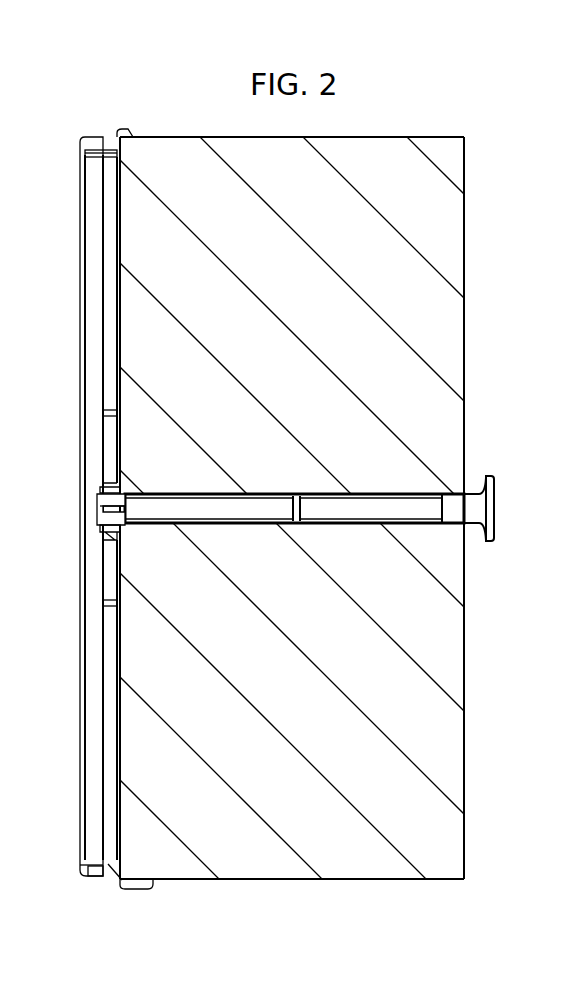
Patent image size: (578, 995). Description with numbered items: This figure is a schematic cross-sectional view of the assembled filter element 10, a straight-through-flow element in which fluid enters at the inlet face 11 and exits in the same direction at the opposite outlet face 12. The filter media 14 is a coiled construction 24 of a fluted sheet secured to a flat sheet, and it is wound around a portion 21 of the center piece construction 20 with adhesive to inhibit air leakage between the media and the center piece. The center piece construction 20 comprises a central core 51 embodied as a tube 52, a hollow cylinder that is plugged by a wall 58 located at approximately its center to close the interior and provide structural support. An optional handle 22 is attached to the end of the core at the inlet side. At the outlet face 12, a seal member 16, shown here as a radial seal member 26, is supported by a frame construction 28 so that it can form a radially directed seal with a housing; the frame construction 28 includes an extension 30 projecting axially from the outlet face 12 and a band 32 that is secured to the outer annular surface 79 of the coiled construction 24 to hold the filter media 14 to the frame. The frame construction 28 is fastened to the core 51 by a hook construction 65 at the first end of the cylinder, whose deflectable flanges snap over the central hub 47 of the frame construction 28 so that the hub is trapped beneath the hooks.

The filter element 10 is at (407, 117).
The inlet face 11 is at (465, 830).
The outlet face 12 is at (114, 805).
The filter media 14 is at (224, 137).
The seal member 16 is at (97, 878).
The center piece construction 20 is at (222, 484).
The portion of the center piece construction 21 is at (364, 494).
The handle 22 is at (486, 469).
The coiled construction 24 is at (392, 879).
The radial seal member 26 is at (85, 868).
The frame construction 28 is at (110, 150).
The extension 30 is at (96, 137).
The band 32 is at (129, 131).
The hub 47 is at (118, 540).
The central core 51 is at (264, 524).
The tube 52 is at (322, 524).
The wall 58 is at (299, 494).
The hook construction 65 is at (88, 470).
The outer annular surface 79 is at (267, 879).